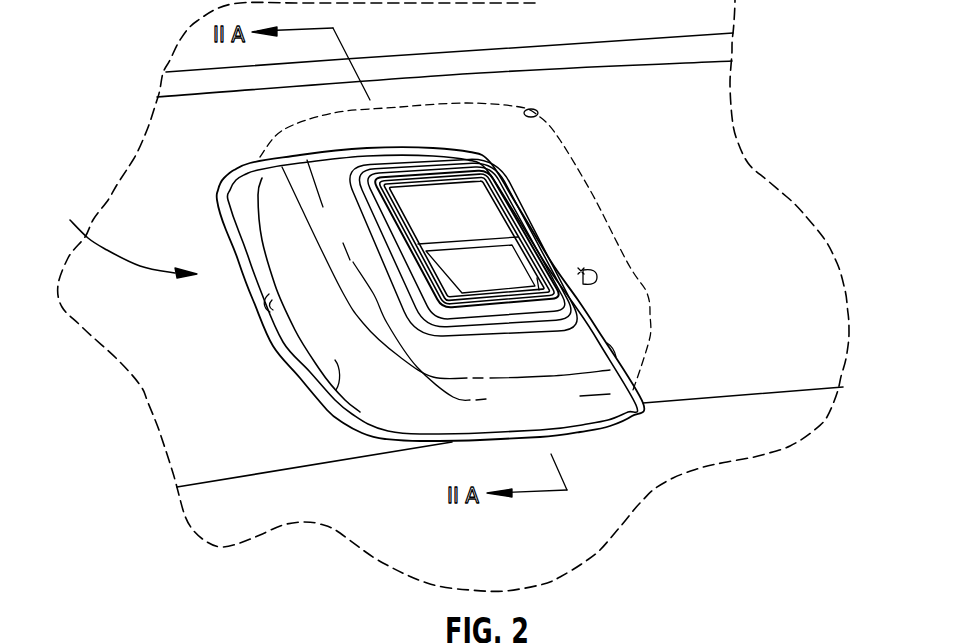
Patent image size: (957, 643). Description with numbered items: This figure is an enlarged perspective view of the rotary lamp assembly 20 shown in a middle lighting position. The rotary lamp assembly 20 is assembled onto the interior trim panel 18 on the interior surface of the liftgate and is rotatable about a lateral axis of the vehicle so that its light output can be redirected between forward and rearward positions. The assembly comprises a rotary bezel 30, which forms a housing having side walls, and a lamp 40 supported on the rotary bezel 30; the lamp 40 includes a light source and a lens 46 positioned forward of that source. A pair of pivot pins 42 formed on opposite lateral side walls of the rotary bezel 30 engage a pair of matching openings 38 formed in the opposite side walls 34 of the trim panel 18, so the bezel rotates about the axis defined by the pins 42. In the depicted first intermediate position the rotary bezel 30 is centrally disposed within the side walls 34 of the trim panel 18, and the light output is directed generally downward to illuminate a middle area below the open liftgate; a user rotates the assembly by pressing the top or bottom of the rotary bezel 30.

The interior trim panel 18 is at (733, 367).
The rotary lamp assembly 20 is at (123, 237).
The rotary bezel 30 is at (327, 403).
The side walls of the trim panel 34 is at (240, 200).
The openings 38 is at (584, 272).
The lamp 40 is at (372, 636).
The pivot pins 42 is at (265, 300).
The lens 46 is at (430, 207).